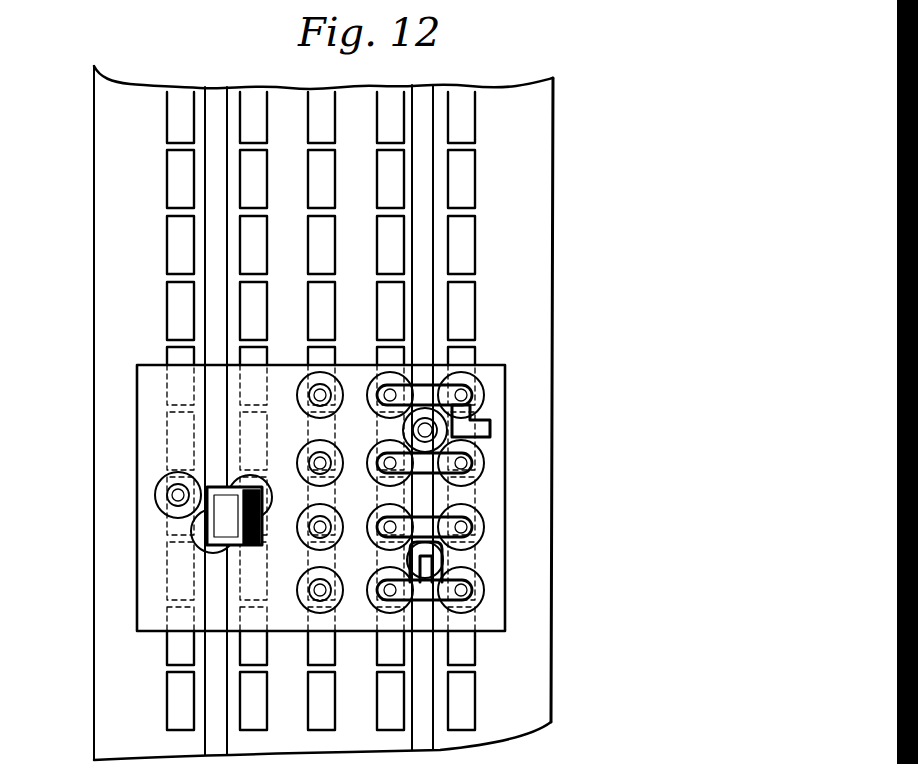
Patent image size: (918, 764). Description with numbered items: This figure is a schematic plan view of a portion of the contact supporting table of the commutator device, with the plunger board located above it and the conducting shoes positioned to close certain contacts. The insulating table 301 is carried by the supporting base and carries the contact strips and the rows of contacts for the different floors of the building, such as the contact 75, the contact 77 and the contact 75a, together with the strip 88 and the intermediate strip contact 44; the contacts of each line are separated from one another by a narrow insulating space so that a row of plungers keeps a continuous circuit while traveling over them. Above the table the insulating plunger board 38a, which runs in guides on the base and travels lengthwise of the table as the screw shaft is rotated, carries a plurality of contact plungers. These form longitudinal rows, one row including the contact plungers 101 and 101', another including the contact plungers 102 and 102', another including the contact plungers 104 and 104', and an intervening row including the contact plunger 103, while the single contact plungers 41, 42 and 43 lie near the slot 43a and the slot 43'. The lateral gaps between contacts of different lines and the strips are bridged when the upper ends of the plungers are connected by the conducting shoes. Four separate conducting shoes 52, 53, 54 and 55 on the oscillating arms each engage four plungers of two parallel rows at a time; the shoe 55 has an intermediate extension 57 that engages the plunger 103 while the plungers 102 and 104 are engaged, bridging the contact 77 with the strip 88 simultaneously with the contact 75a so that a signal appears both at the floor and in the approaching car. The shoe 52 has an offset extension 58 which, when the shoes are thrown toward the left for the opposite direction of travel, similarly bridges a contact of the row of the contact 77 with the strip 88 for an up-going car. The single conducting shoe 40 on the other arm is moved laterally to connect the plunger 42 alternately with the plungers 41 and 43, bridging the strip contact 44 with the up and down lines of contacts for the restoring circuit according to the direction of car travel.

The insulating table 301 is at (553, 318).
The intermediate strip contact 44 is at (210, 697).
The slot 43a is at (300, 542).
The contact 75 is at (306, 636).
The contact 77 is at (374, 411).
The strip 88 is at (420, 680).
The slot 75a is at (484, 638).
The plunger board 38a is at (150, 603).
The contact plunger 43 is at (152, 509).
The slot 43' is at (157, 559).
The contact plunger 41 is at (266, 486).
The conducting shoe 40 is at (230, 487).
The contact plunger 42 is at (228, 546).
The contact plunger 101' is at (305, 547).
The contact plunger 101 is at (328, 598).
The conducting shoe 52 is at (440, 388).
The offset extension 58 is at (490, 428).
The conducting shoe 53 is at (424, 477).
The contact plunger 104' is at (493, 527).
The contact plunger 102' is at (348, 518).
The conducting shoe 54 is at (424, 517).
The intermediate extension 57 is at (445, 575).
The contact plunger 103 is at (470, 562).
The contact plunger 104 is at (491, 590).
The contact plunger 102 is at (376, 588).
The conducting shoe 55 is at (424, 603).